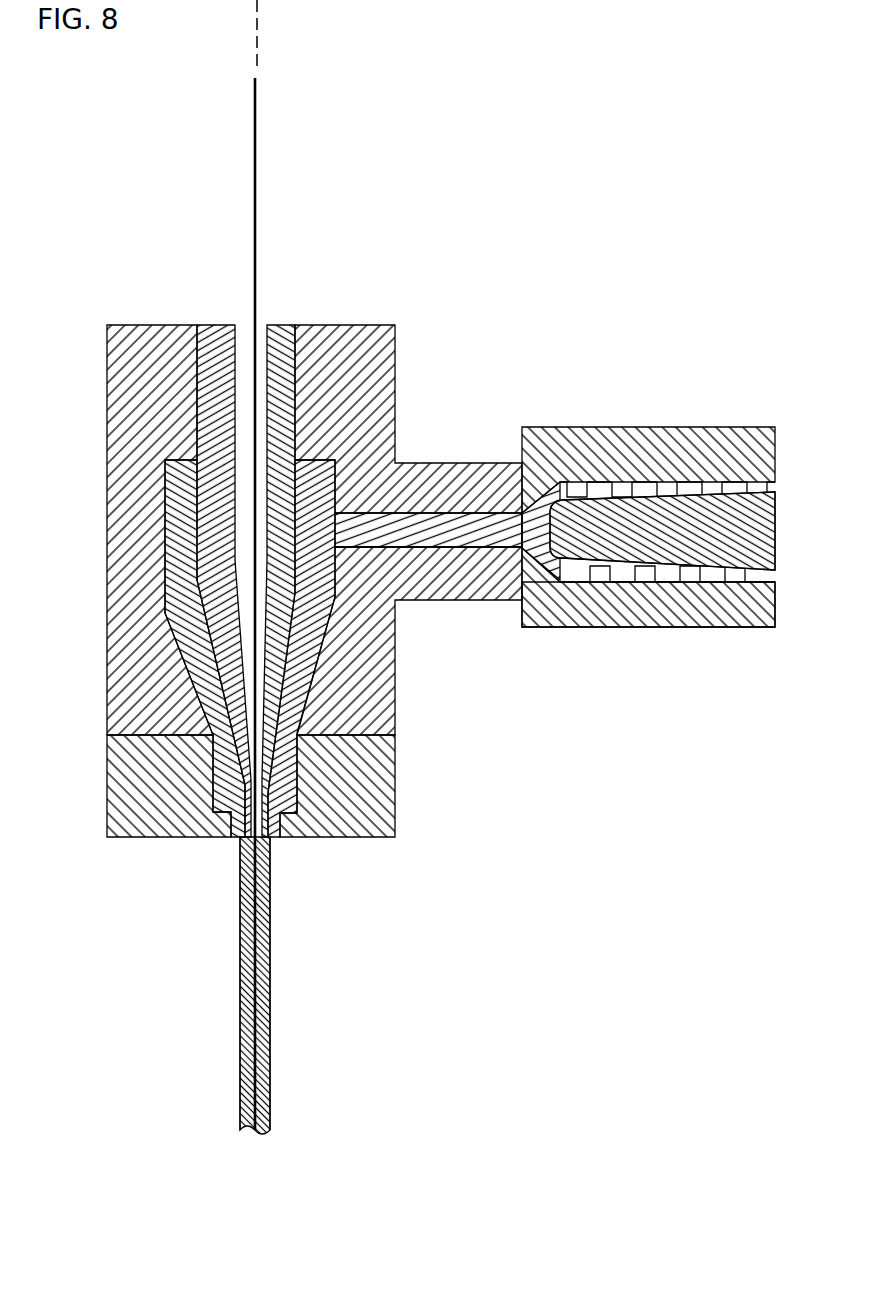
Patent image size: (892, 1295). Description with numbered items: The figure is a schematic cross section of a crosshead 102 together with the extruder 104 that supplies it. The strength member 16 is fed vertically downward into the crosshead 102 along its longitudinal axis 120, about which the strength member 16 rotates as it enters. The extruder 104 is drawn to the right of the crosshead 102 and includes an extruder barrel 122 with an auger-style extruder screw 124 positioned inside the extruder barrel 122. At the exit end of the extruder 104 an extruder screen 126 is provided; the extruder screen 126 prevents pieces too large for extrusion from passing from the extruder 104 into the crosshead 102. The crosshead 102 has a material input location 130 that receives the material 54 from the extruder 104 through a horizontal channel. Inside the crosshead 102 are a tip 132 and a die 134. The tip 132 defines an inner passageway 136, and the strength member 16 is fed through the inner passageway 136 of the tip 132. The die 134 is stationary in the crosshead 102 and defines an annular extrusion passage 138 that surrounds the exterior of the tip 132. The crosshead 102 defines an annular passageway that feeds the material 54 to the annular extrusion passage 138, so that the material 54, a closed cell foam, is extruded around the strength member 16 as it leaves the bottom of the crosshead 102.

The strength member 16 is at (258, 143).
The longitudinal axis 120 is at (258, 50).
The crosshead 102 is at (395, 360).
The tip 132 is at (282, 323).
The material 54 is at (397, 518).
The material input location 130 is at (483, 547).
The extruder 104 is at (658, 627).
The extruder barrel 122 is at (775, 600).
The extruder screw 124 is at (775, 517).
The extruder screen 126 is at (528, 528).
The die 134 is at (278, 837).
The inner passageway 136 is at (238, 837).
The annular extrusion passage 138 is at (272, 837).